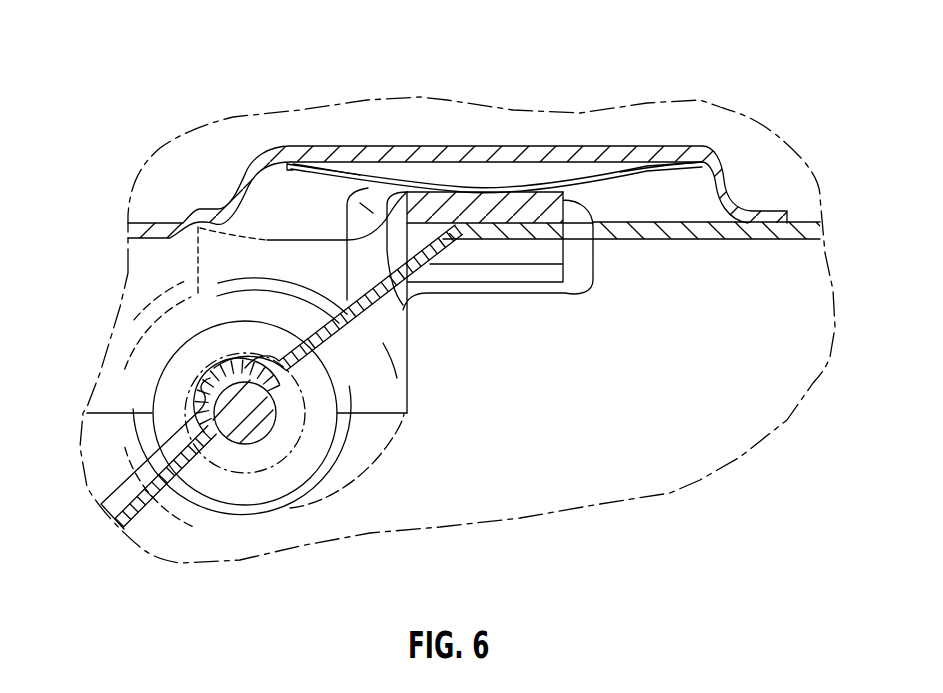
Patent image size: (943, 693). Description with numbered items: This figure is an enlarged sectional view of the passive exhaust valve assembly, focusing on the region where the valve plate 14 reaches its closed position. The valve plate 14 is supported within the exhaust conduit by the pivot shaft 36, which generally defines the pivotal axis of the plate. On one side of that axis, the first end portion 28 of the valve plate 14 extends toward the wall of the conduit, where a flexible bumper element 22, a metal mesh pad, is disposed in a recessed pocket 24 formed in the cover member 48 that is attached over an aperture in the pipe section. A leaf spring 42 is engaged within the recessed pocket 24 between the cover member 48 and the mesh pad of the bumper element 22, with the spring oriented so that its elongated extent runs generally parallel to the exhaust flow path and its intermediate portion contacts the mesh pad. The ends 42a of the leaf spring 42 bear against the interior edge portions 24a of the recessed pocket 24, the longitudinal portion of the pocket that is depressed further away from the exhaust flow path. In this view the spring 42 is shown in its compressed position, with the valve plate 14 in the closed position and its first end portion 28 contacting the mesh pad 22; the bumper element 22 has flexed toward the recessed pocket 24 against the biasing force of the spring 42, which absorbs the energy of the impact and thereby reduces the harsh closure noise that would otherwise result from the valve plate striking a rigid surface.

The valve plate 14 is at (147, 463).
The bumper element 22 is at (460, 212).
The recessed pocket 24 is at (494, 175).
The interior edge portion of the recessed pocket 24a is at (695, 200).
The first end portion of the valve plate 28 is at (465, 262).
The pivot shaft 36 is at (258, 428).
The spring 42 is at (587, 178).
The ends of the leaf spring 42a is at (345, 170).
The cover member 48 is at (635, 146).